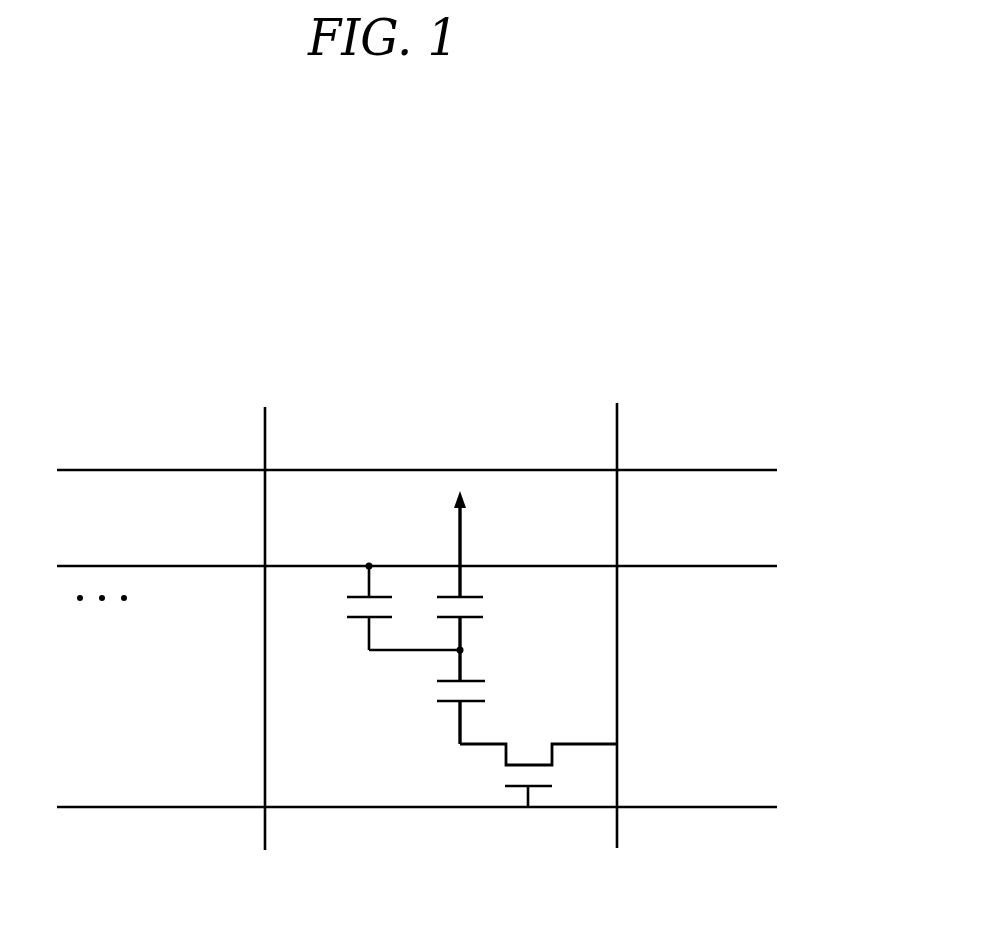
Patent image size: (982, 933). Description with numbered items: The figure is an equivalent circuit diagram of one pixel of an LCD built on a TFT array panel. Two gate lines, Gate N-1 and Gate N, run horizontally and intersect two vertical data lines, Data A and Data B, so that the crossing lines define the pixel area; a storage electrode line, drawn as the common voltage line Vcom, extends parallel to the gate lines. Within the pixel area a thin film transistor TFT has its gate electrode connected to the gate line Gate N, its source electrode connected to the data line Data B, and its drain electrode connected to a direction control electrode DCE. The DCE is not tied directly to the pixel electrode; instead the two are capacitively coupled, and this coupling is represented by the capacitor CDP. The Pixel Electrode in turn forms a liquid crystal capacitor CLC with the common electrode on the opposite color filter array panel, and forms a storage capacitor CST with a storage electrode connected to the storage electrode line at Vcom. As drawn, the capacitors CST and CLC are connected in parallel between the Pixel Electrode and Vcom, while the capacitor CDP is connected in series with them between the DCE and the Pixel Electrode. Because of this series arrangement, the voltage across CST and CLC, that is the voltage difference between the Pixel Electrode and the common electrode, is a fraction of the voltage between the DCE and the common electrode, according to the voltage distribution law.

The gate line Gate N-1 is at (416, 450).
The common electrode voltage line Vcom is at (415, 549).
The gate line Gate N is at (417, 789).
The data line Data A is at (274, 609).
The data line Data B is at (608, 608).
The storage capacitor CST is at (386, 607).
The liquid crystal capacitor CLC is at (443, 606).
The coupling capacitor CDP is at (441, 690).
The pixel electrode Pixel Electrode is at (470, 650).
The direction control electrode DCE is at (470, 723).
The thin film transistor TFT is at (500, 782).